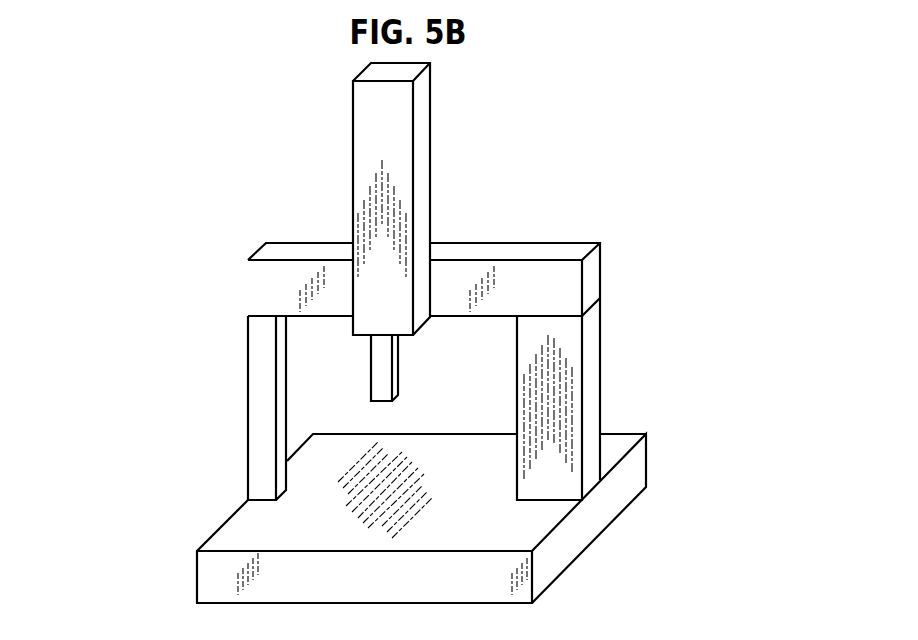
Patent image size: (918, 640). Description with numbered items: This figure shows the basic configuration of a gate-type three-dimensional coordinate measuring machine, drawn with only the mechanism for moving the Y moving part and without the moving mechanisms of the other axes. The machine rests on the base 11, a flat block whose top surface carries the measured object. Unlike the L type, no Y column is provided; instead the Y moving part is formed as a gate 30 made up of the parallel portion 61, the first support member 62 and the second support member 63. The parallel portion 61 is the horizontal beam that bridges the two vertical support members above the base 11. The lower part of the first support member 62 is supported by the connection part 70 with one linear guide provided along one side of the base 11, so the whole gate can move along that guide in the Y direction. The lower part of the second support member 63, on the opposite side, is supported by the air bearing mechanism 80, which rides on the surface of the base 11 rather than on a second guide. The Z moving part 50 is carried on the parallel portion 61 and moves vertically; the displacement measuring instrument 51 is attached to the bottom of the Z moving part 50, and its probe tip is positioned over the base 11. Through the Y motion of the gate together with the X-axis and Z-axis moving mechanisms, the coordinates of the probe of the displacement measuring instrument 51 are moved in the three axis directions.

The base 11 is at (212, 580).
The gantry / moving body 30 is at (416, 319).
The Z moving part 50 is at (420, 135).
The displacement measuring instrument 51 is at (380, 382).
The parallel portion 61 is at (307, 248).
The first support member 62 is at (592, 353).
The second support member 63 is at (260, 373).
The connection part 70 is at (605, 496).
The air bearing mechanism 80 is at (218, 485).